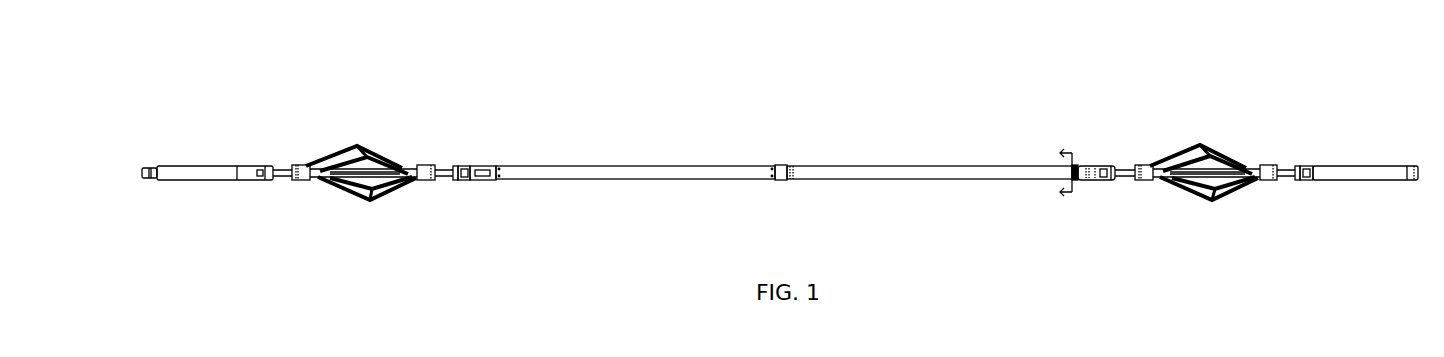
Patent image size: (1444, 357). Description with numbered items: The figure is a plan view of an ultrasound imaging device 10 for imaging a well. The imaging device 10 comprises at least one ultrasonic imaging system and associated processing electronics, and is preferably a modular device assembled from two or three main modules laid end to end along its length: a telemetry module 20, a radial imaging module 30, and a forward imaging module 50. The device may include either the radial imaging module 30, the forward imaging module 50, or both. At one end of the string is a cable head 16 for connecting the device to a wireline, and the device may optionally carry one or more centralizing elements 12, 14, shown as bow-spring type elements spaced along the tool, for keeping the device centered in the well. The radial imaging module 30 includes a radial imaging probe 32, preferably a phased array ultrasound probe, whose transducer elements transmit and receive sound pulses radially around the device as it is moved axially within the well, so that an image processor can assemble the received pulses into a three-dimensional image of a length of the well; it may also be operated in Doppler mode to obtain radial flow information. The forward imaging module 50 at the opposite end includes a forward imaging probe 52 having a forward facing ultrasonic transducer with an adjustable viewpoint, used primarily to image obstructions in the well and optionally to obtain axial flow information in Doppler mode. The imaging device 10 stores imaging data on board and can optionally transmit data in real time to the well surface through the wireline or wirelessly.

The imaging device 10 is at (851, 156).
The centralizing element 12 is at (493, 198).
The centralizing element 14 is at (1315, 198).
The cable head 16 is at (237, 198).
The telemetry module 20 is at (782, 198).
The radial imaging module 30 is at (1092, 198).
The radial imaging probe 32 is at (1077, 167).
The forward imaging module 50 is at (1418, 198).
The forward imaging probe 52 is at (1415, 167).